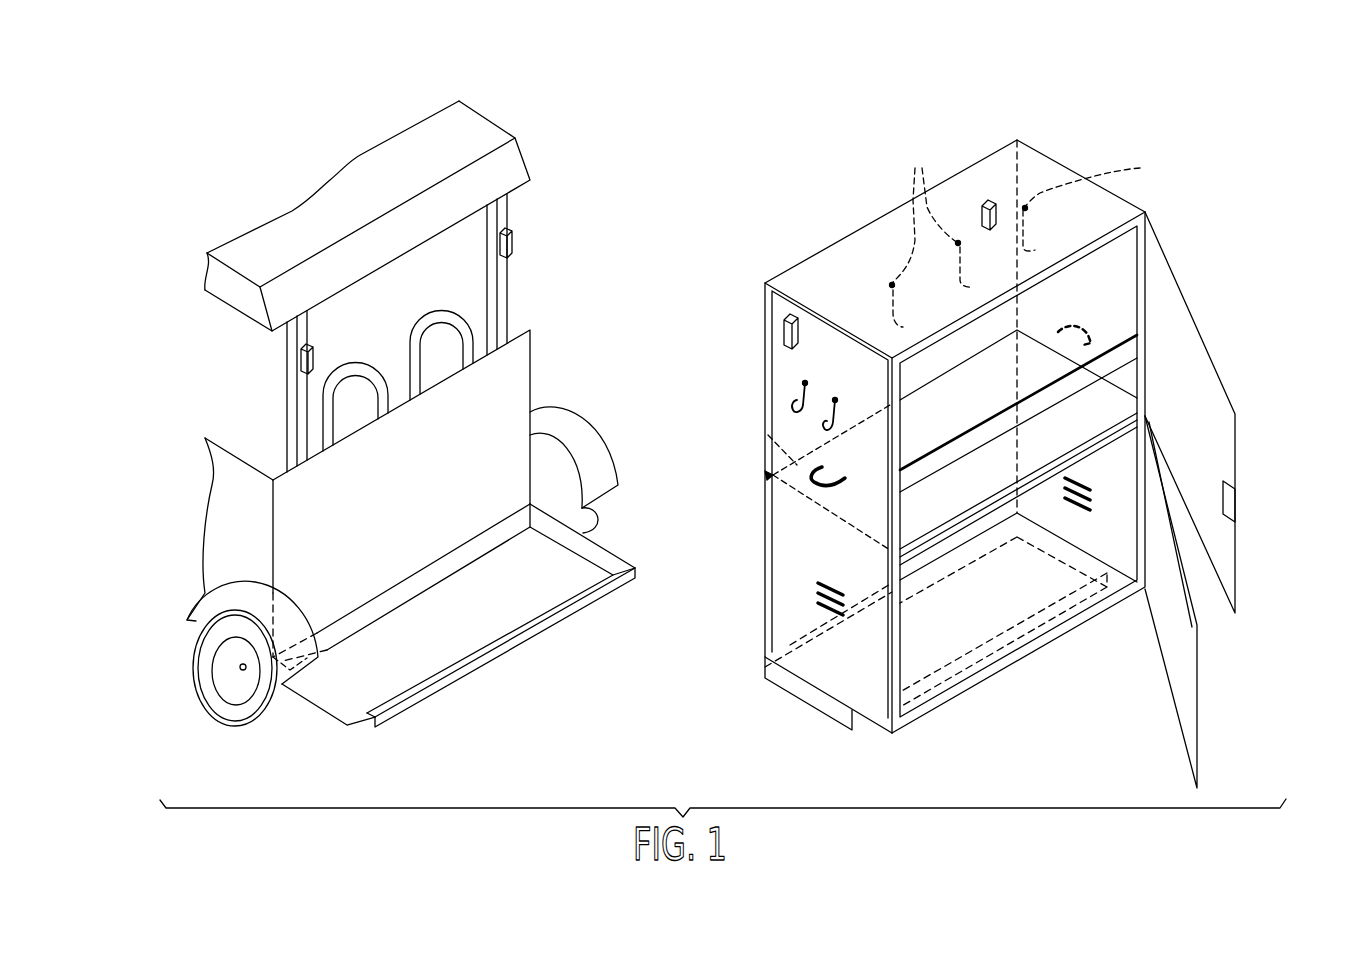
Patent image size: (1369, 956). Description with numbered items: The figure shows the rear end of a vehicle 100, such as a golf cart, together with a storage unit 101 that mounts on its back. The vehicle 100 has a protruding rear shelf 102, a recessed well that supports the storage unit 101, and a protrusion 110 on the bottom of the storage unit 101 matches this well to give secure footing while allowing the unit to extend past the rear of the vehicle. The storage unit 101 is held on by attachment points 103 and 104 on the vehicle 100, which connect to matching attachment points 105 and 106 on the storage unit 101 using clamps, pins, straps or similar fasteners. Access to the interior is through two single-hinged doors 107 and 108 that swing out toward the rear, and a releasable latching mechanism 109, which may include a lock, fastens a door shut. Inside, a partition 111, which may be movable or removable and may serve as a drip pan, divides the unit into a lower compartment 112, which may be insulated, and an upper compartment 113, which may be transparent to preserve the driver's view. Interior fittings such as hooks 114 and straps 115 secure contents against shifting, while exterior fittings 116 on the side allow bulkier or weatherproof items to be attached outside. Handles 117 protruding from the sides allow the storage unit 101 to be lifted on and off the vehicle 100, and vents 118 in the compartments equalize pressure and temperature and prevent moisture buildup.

The vehicle 100 is at (494, 112).
The storage unit 101 is at (1068, 147).
The rear shelf 102 is at (579, 572).
The attachment point 103 is at (513, 236).
The attachment point 104 is at (313, 349).
The attachment point 105 is at (975, 213).
The attachment point 106 is at (778, 300).
The door 107 is at (1191, 310).
The door 108 is at (1172, 690).
The releasable latching mechanism 109 is at (1222, 483).
The protrusion 110 is at (807, 707).
The partition 111 is at (768, 435).
The compartment 112 is at (1010, 587).
The upper compartment 113 is at (1038, 368).
The hooks 114 is at (1032, 235).
The straps 115 is at (1001, 412).
The exterior fittings 116 is at (834, 398).
The handles 117 is at (813, 478).
The vents 118 is at (808, 622).